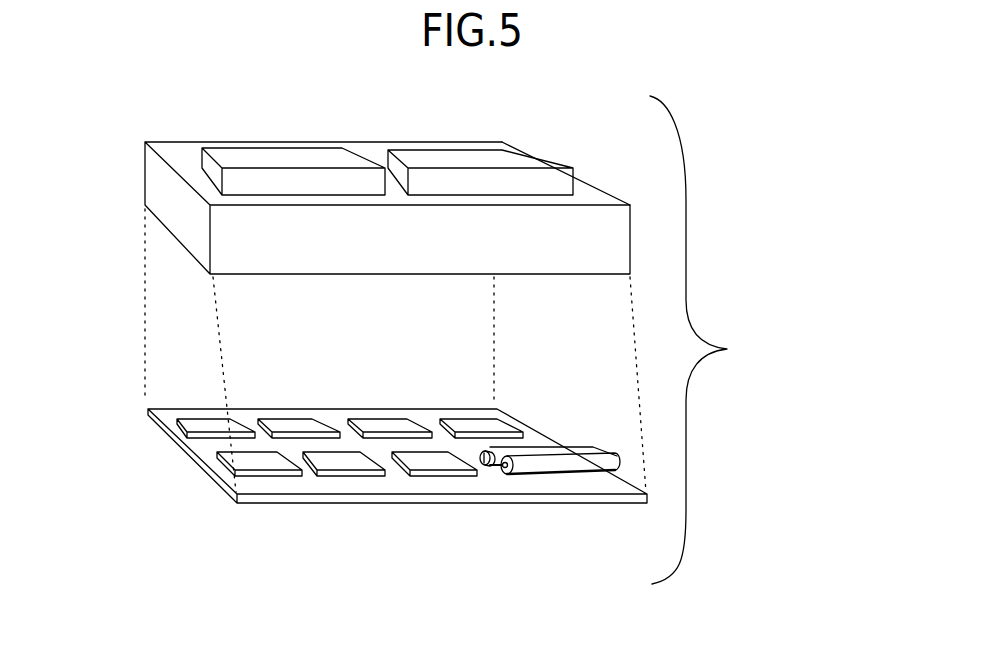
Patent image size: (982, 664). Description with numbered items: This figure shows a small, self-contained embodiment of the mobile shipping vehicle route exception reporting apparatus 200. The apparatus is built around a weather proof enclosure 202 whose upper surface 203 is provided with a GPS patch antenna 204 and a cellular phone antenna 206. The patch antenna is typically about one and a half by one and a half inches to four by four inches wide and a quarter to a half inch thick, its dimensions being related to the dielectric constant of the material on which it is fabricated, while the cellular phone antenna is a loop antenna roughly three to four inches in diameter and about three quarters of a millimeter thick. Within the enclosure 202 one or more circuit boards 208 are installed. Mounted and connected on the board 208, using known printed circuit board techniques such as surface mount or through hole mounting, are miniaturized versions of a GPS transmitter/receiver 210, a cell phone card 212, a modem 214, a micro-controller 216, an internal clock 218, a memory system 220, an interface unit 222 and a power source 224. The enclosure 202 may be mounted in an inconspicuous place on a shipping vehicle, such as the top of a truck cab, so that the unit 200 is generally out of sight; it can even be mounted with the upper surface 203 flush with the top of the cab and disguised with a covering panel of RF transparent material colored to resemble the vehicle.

The route exception reporting apparatus 200 is at (749, 342).
The enclosure 202 is at (407, 208).
The upper surface 203 is at (617, 202).
The GPS patch antenna 204 is at (293, 155).
The cellular phone antenna 206 is at (480, 157).
The circuit board 208 is at (180, 450).
The GPS transmitter/receiver 210 is at (211, 425).
The cell phone card 212 is at (303, 425).
The modem 214 is at (483, 425).
The micro-controller 216 is at (247, 463).
The internal clock 218 is at (393, 425).
The memory system 220 is at (335, 462).
The interface unit 222 is at (423, 462).
The power source 224 is at (557, 462).